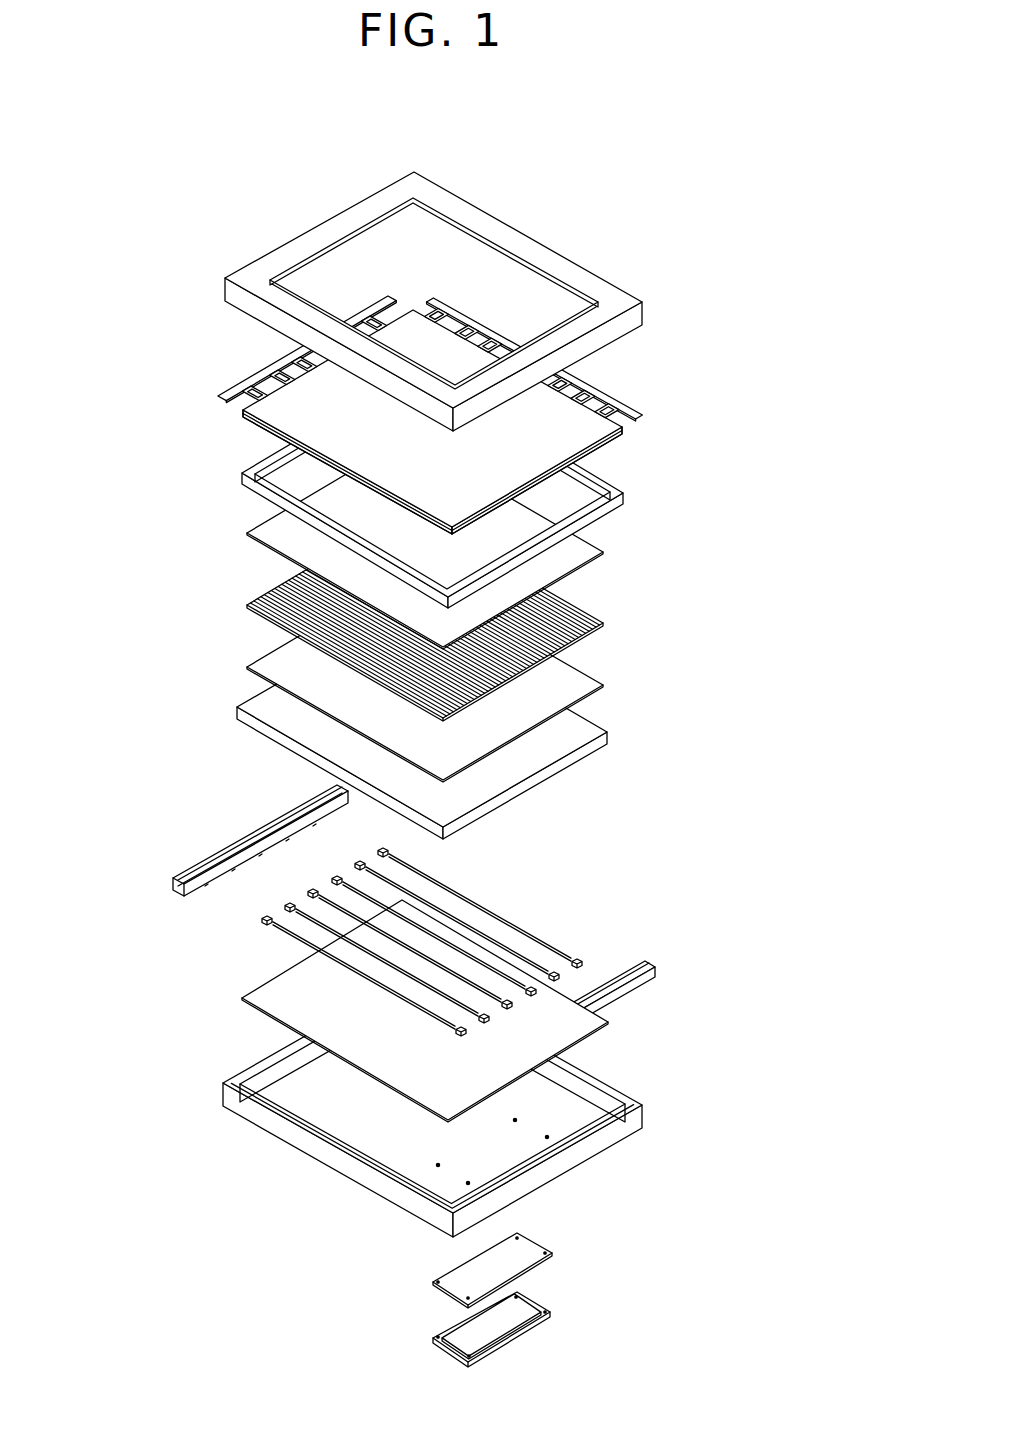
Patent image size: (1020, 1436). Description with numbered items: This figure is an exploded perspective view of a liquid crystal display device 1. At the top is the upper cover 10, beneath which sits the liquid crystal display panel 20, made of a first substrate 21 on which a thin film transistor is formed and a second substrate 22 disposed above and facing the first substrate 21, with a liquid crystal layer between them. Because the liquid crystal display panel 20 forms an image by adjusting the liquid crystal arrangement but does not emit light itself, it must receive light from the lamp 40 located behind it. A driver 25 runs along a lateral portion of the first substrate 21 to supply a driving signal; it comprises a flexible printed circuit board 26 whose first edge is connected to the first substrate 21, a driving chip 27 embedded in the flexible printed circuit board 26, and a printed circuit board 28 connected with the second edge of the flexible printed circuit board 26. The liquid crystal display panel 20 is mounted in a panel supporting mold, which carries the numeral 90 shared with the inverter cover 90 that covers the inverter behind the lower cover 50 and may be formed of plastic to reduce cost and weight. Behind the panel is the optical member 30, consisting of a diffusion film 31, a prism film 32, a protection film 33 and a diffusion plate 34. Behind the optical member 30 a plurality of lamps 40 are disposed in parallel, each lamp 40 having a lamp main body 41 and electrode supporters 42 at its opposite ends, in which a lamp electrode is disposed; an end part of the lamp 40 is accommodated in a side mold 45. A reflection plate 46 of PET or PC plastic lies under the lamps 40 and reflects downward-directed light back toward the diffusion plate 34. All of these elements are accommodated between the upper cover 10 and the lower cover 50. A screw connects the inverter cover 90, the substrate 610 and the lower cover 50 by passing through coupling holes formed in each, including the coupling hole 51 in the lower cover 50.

The liquid crystal display device 1 is at (254, 181).
The upper cover 10 is at (644, 310).
The liquid crystal display panel 20 is at (504, 422).
The first substrate 21 is at (623, 428).
The second substrate 22 is at (612, 446).
The driver 25 is at (371, 372).
The flexible printed circuit board 26 is at (253, 389).
The driving chip 27 is at (240, 392).
The printed circuit board 28 is at (258, 368).
The optical member 30 is at (501, 638).
The diffusion film 31 is at (605, 683).
The prism film 32 is at (605, 619).
The protection film 33 is at (483, 543).
The diffusion plate 34 is at (608, 742).
The lamp 40 is at (458, 941).
The lamp main body 41 is at (500, 913).
The electrode supporters 42 is at (577, 862).
The side mold 45 is at (193, 867).
The reflection plate 46 is at (611, 1022).
The lower cover 50 is at (470, 1106).
The coupling hole 51 is at (550, 1137).
The substrate 610 is at (553, 1253).
The inverter cover 90 is at (240, 483).